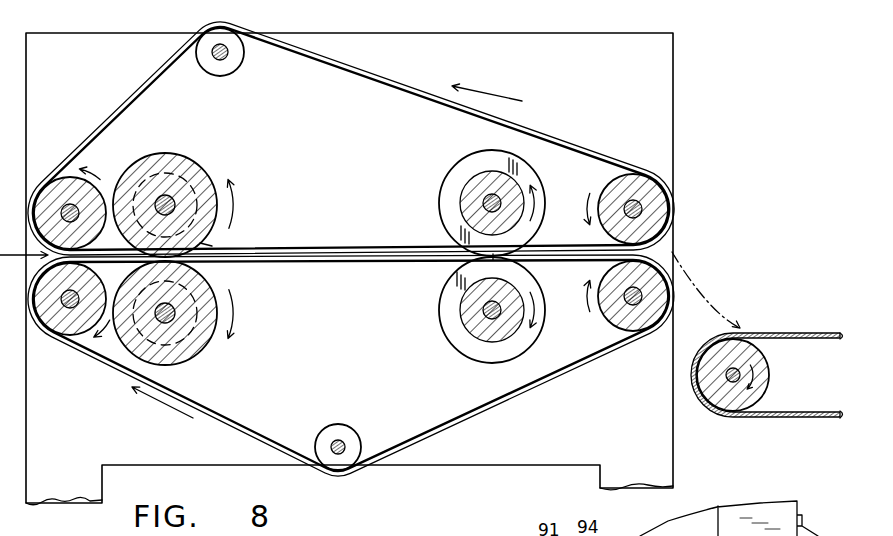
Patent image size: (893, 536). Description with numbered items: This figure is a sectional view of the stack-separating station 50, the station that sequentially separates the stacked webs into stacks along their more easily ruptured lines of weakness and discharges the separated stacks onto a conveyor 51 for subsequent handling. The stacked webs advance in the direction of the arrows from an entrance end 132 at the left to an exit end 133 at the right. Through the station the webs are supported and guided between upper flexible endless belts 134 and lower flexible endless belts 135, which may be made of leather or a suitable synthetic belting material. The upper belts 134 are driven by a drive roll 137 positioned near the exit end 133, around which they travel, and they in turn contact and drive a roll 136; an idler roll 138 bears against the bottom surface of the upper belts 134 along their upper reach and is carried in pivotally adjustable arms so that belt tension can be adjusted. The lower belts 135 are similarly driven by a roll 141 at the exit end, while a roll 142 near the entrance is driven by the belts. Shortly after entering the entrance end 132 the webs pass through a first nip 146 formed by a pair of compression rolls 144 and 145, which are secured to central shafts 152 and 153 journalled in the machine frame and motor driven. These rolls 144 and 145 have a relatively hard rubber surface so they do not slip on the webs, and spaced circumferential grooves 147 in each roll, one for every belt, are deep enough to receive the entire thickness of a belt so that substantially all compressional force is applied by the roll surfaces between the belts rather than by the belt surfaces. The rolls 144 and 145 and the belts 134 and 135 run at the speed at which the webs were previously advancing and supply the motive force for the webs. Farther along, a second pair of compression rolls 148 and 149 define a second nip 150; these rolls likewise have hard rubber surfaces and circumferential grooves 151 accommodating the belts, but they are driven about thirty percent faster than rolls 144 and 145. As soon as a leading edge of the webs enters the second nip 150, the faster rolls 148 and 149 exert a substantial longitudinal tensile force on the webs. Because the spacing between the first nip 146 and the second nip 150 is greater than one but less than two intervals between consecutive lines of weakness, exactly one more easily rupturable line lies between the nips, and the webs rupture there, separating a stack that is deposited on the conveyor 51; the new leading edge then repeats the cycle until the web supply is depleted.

The stack-separating station 50 is at (685, 90).
The conveyor 51 is at (805, 339).
The entrance end 132 is at (12, 257).
The exit end 133 is at (712, 306).
The upper flexible endless belts 134 is at (287, 47).
The lower flexible endless belts 135 is at (312, 261).
The roll 136 is at (55, 195).
The drive roll 137 is at (655, 207).
The idler roll 138 is at (231, 41).
The roll 141 is at (72, 322).
The roll 142 is at (657, 304).
The compression roll 144 is at (200, 181).
The compression roll 145 is at (207, 328).
The first nip 146 is at (205, 244).
The circumferential grooves 147 is at (185, 170).
The compression roll 148 is at (440, 208).
The compression roll 149 is at (441, 329).
The second nip 150 is at (490, 262).
The circumferential grooves 151 is at (466, 165).
The central shaft 152 is at (162, 197).
The central shaft 153 is at (186, 346).